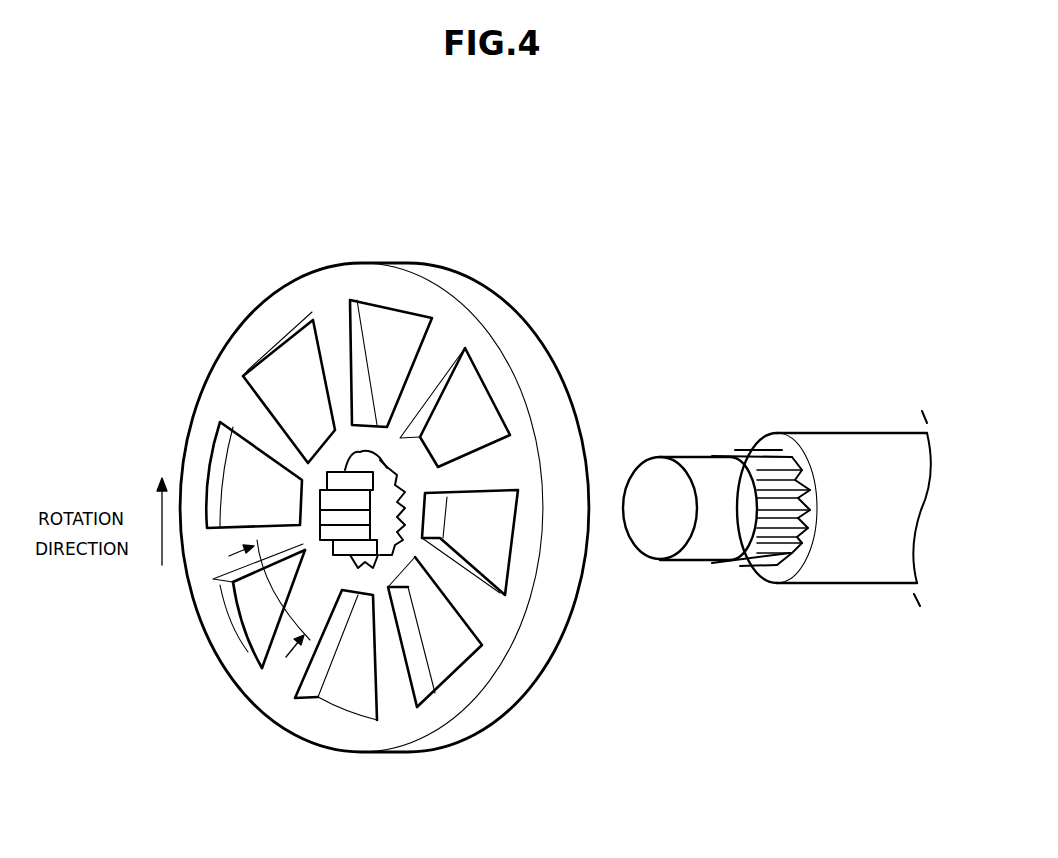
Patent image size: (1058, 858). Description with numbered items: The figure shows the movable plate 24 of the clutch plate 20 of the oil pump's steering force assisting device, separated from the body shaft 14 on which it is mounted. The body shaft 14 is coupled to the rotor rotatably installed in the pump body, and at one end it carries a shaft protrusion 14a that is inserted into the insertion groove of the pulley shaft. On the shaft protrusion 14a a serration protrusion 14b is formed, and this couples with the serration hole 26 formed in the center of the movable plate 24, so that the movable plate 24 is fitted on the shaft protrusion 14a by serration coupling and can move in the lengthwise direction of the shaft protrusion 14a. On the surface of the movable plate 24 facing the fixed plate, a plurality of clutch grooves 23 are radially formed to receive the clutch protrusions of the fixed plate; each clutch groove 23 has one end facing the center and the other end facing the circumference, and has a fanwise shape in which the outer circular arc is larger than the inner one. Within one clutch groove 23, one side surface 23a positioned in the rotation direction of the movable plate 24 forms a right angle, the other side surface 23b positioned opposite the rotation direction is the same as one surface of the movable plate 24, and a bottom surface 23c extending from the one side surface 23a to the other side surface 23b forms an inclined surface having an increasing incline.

The clutch plate 20 is at (391, 255).
The movable plate 24 is at (268, 308).
The clutch grooves 23 is at (283, 375).
The one side surface 23a is at (230, 580).
The other side surface 23b is at (252, 643).
The bottom surface 23c is at (257, 612).
The serration hole 26 is at (367, 490).
The body shaft 14 is at (862, 442).
The shaft protrusion 14a is at (688, 462).
The serration protrusion 14b is at (775, 477).